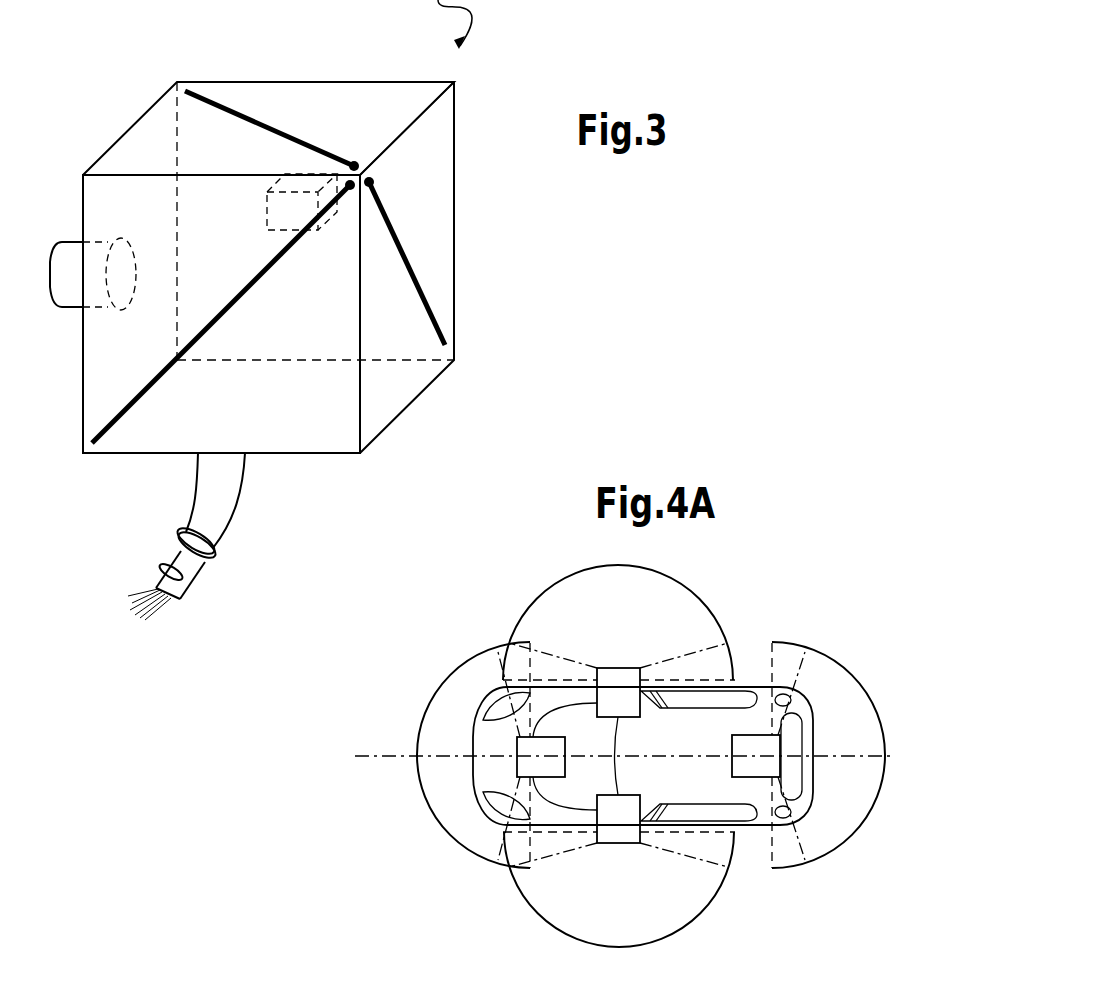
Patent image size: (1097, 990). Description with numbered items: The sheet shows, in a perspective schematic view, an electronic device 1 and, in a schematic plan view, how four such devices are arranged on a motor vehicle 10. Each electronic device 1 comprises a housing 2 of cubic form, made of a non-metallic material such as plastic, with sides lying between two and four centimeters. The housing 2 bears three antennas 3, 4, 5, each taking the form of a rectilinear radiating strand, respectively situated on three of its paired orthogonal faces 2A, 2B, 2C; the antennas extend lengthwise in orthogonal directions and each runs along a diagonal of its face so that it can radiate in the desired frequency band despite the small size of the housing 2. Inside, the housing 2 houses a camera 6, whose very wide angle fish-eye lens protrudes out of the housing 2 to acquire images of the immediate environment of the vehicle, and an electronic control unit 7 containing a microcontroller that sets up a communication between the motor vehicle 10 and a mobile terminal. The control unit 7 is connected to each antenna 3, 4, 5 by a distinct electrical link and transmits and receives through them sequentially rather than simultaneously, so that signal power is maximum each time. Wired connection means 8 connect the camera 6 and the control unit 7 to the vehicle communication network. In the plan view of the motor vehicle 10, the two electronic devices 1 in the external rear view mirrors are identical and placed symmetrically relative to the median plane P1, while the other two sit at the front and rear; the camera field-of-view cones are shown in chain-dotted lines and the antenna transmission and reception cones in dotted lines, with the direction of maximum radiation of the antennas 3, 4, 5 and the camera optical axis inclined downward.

In FIG. 4A, the electronic device 1 is at (557, 747).
In FIG. 4A, the motor vehicle 10 is at (753, 678).
In FIG. 4A, the median plane P1 is at (374, 756).
In FIG. 3, the housing 2 is at (464, 140).
In FIG. 3, the face of housing 2A is at (435, 187).
In FIG. 3, the face of housing 2B is at (293, 413).
In FIG. 3, the face of housing 2C is at (387, 95).
In FIG. 3, the antenna 3 is at (414, 268).
In FIG. 3, the antenna 4 is at (226, 314).
In FIG. 3, the antenna 5 is at (268, 122).
In FIG. 3, the camera 6 is at (72, 243).
In FIG. 3, the electronic control unit 7 is at (268, 207).
In FIG. 3, the wired connection means 8 is at (178, 500).